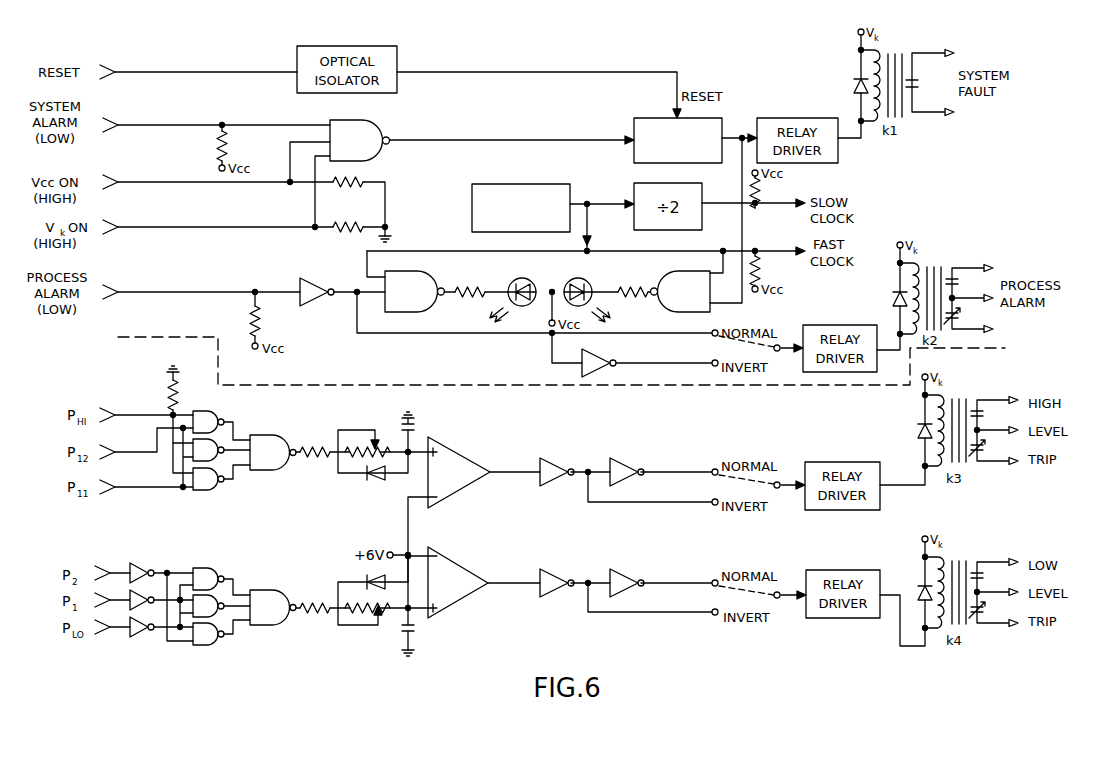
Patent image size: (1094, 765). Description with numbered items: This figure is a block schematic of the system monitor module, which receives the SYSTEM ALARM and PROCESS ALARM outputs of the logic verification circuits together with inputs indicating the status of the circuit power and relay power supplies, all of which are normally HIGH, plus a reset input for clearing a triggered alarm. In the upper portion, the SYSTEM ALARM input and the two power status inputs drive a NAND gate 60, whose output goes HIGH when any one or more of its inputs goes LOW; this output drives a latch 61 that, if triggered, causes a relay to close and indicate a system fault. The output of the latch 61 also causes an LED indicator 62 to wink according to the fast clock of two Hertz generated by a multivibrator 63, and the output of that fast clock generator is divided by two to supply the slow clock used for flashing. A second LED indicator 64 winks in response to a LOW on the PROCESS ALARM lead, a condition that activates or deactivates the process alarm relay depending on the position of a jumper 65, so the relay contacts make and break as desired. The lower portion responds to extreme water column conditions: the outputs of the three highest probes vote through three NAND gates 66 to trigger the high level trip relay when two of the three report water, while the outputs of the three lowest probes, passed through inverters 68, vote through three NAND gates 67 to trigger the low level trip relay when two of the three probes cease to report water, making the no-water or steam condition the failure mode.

The NAND gate 60 is at (397, 103).
The latch 61 is at (632, 118).
The LED indicator 62 is at (586, 279).
The multivibrator 63 is at (500, 184).
The LED indicator 64 is at (516, 279).
The jumper 65 is at (716, 341).
The NAND gates 66 is at (230, 472).
The NAND gates 67 is at (228, 628).
The inverters 68 is at (150, 622).